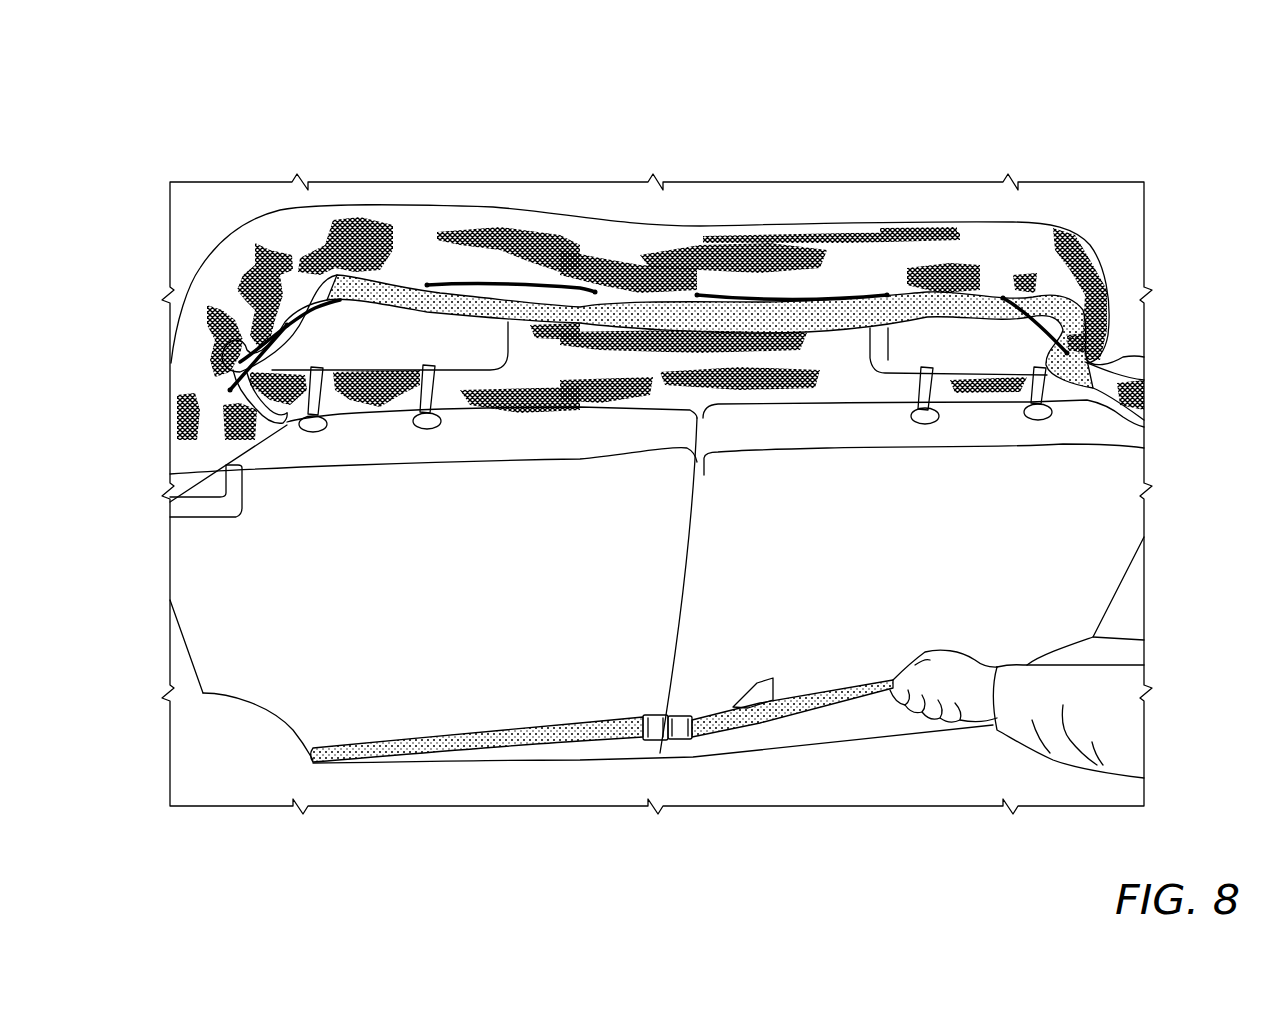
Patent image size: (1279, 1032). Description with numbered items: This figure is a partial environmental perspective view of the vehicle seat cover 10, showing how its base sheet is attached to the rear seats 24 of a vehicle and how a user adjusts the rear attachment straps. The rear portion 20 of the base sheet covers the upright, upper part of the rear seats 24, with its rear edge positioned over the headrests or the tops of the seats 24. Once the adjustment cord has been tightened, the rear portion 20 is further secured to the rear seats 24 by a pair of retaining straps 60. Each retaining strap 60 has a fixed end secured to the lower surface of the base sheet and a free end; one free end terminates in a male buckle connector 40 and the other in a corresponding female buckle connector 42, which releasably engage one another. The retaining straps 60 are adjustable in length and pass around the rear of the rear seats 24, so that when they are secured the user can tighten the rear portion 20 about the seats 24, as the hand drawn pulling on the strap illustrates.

The vehicle seat cover 10 is at (157, 85).
The rear portion 20 is at (628, 258).
The rear seat 24 is at (436, 594).
The male buckle connector 40 is at (683, 717).
The female buckle connector 42 is at (648, 715).
The retaining strap 60 is at (845, 687).